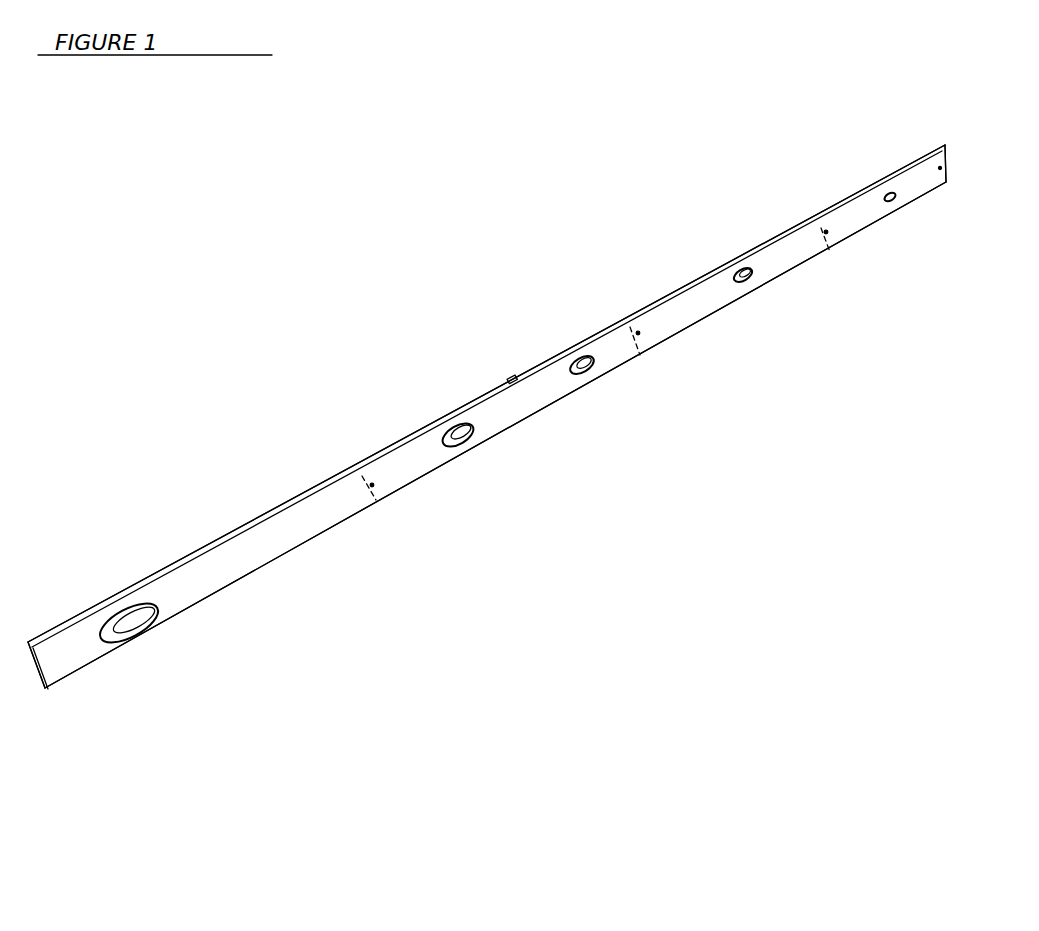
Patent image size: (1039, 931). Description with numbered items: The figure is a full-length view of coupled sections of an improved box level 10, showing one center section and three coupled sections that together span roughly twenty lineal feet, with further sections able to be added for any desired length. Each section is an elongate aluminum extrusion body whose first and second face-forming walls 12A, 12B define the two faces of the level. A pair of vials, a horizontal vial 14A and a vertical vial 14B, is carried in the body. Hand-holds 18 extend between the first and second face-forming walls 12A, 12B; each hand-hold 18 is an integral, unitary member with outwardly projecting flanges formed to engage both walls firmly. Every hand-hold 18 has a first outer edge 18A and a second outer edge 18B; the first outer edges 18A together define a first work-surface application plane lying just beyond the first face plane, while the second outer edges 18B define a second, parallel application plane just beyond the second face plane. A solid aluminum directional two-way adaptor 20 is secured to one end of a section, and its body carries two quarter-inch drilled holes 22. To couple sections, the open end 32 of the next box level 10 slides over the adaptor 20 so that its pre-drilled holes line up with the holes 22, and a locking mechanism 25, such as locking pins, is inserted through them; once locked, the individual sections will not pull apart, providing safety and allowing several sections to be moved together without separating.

The box level 10 is at (220, 520).
The first face-forming wall 12A is at (312, 538).
The second face-forming wall 12B is at (285, 503).
The horizontal vial 14A is at (530, 407).
The vertical vial 14B is at (510, 380).
The hand-hold 18 is at (448, 428).
The first outer edge of hand-hold 18A is at (132, 613).
The second outer edge of hand-hold 18B is at (143, 638).
The solid aluminum directional 2-way adaptor 20 is at (946, 182).
The hole 22 is at (370, 483).
The locking mechanism 25 is at (378, 497).
The open end 32 is at (44, 688).